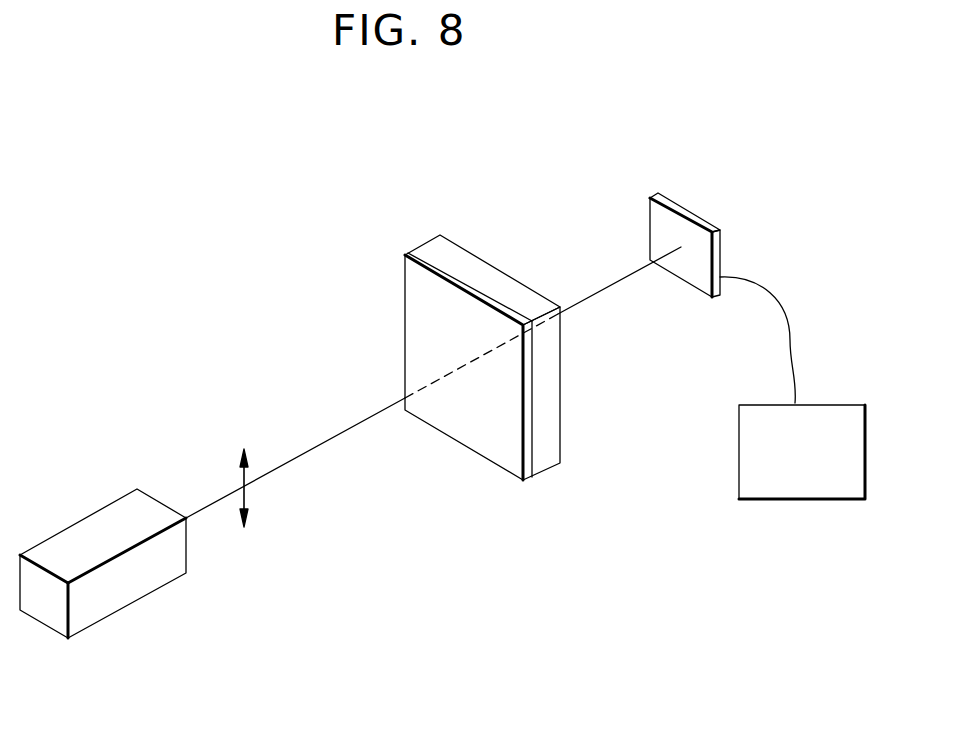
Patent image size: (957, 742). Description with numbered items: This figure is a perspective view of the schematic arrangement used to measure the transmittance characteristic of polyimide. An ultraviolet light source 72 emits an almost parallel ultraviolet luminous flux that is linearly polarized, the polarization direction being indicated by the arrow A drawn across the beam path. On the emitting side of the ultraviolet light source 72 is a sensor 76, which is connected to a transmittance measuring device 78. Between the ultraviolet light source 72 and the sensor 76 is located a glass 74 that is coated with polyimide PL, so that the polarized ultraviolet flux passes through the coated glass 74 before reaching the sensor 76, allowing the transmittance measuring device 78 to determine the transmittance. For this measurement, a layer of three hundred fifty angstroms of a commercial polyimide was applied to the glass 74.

The ultraviolet light source 72 is at (118, 595).
The arrow A is at (247, 501).
The glass 74 is at (542, 467).
The polyimide PL is at (528, 480).
The sensor 76 is at (692, 210).
The transmittance measuring device 78 is at (793, 500).